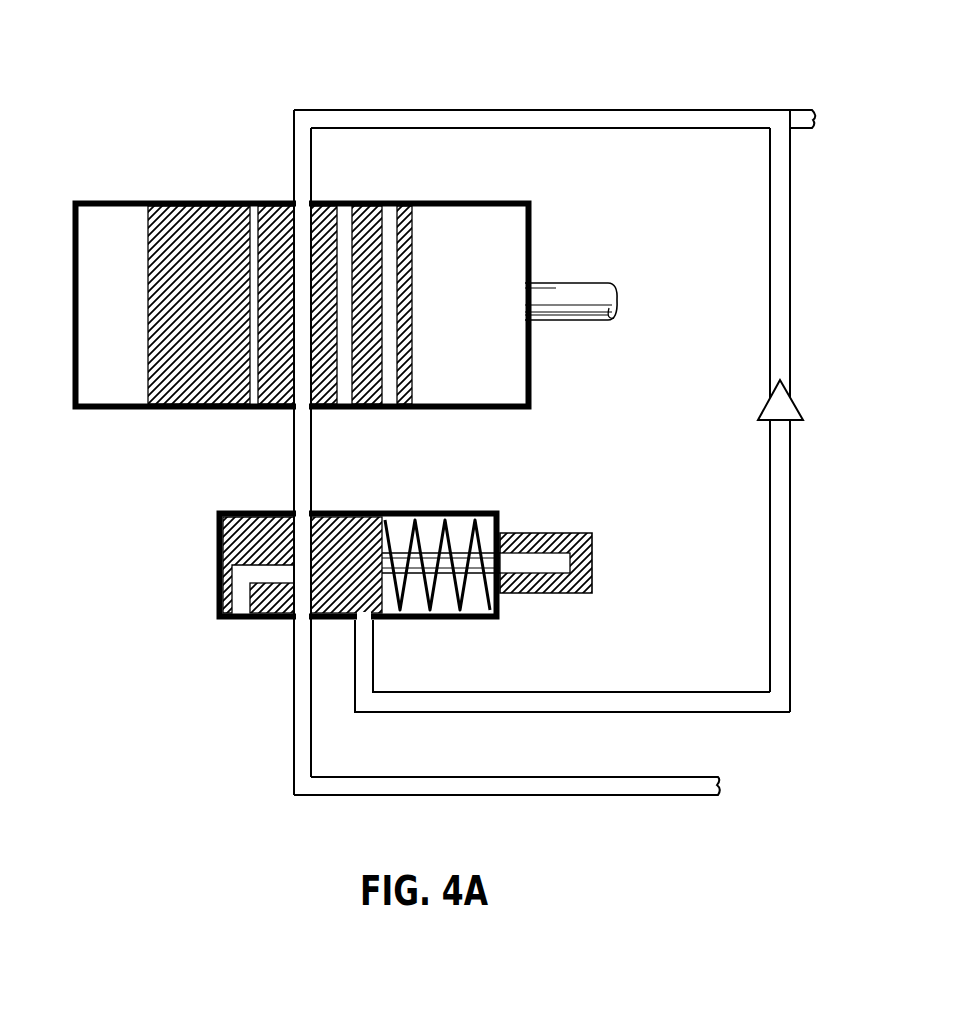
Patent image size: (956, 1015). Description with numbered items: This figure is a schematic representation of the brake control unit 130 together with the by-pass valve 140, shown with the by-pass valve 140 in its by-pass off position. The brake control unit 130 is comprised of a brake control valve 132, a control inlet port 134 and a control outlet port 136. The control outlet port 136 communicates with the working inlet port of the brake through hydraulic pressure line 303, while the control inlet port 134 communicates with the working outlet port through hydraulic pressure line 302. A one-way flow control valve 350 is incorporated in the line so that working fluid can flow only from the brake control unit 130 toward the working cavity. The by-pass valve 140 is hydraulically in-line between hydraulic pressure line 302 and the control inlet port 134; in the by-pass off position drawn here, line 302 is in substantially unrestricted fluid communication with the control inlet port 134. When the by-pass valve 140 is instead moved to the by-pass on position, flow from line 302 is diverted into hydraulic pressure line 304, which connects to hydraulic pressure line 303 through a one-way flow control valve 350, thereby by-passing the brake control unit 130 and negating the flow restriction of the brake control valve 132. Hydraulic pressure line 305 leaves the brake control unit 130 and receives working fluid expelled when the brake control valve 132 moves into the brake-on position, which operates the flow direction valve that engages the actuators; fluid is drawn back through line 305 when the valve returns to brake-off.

The brake control unit 130 is at (72, 400).
The brake control valve 132 is at (188, 392).
The control inlet port 134 is at (294, 441).
The control outlet port 136 is at (294, 200).
The by-pass valve 140 is at (216, 572).
The hydraulic pressure line 302 is at (628, 795).
The hydraulic pressure line 303 is at (542, 110).
The hydraulic pressure line 304 is at (618, 712).
The hydraulic pressure line 305 is at (583, 324).
The one-way flow control valve 350 is at (800, 412).